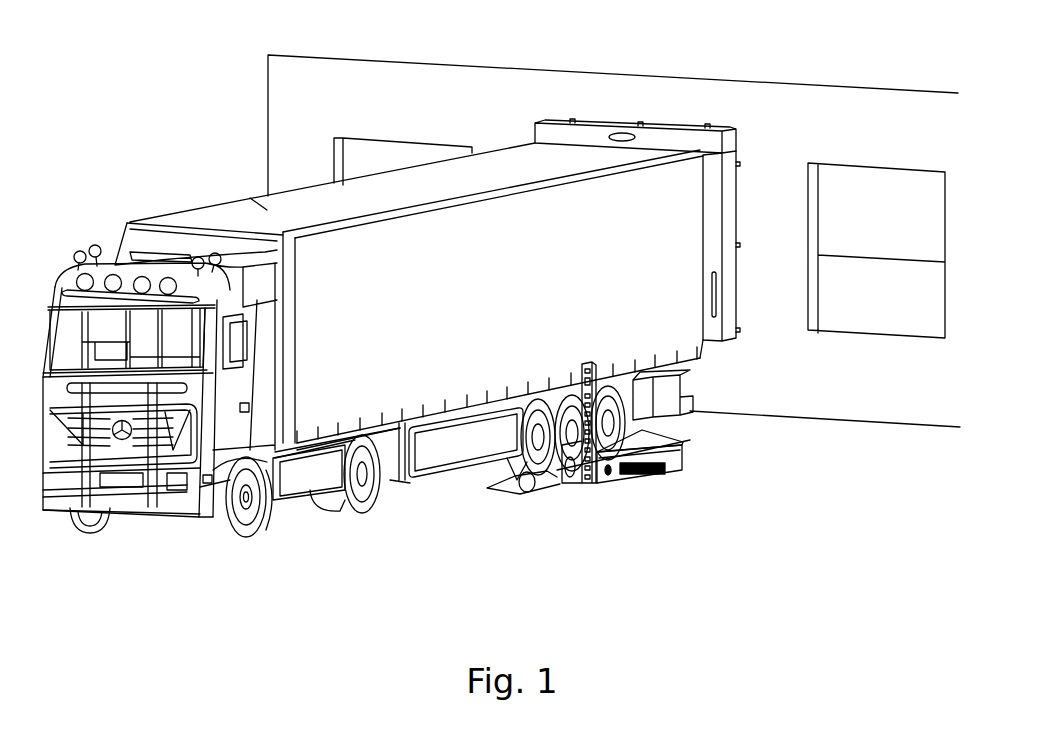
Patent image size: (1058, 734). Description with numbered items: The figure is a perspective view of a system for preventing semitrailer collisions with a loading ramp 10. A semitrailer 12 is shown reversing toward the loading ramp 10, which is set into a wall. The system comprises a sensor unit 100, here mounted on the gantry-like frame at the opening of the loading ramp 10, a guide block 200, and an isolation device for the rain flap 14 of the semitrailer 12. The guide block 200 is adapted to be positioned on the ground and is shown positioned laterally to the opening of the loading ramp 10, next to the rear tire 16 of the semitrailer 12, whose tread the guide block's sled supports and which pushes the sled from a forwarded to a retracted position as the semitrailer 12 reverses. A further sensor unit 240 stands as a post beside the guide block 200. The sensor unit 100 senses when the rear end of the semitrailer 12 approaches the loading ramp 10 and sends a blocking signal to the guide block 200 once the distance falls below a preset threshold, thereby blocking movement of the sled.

The loading ramp 10 is at (609, 184).
The sensor unit 100 is at (625, 132).
The semitrailer 12 is at (268, 210).
The rain flap 14 is at (634, 396).
The rear tire 16 is at (643, 428).
The guide block 200 is at (707, 485).
The sensor unit 240 is at (573, 472).